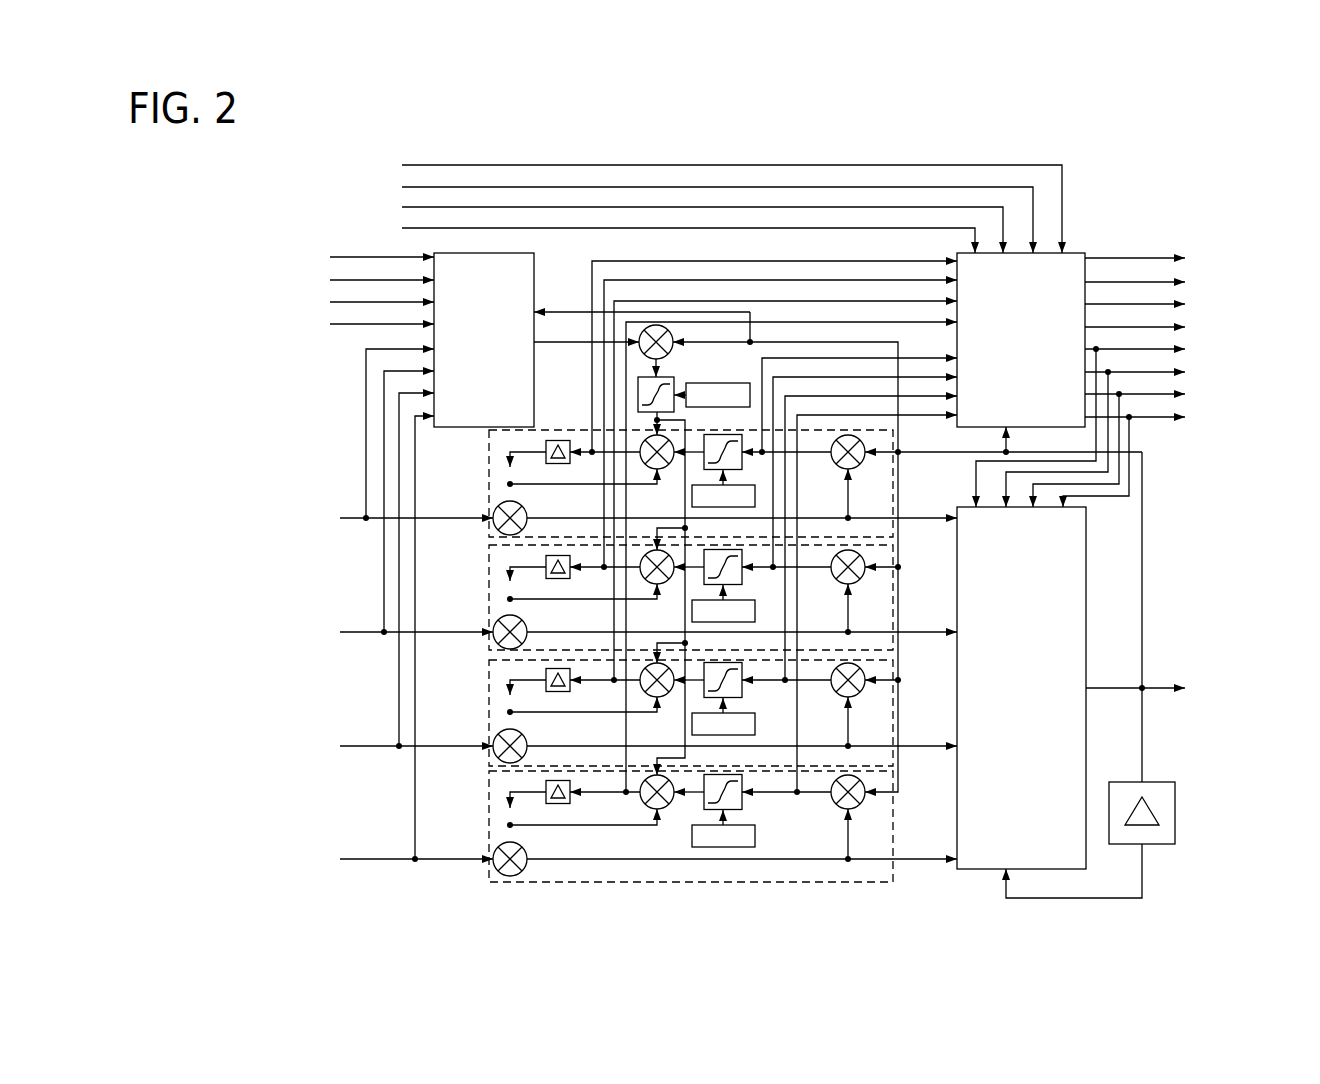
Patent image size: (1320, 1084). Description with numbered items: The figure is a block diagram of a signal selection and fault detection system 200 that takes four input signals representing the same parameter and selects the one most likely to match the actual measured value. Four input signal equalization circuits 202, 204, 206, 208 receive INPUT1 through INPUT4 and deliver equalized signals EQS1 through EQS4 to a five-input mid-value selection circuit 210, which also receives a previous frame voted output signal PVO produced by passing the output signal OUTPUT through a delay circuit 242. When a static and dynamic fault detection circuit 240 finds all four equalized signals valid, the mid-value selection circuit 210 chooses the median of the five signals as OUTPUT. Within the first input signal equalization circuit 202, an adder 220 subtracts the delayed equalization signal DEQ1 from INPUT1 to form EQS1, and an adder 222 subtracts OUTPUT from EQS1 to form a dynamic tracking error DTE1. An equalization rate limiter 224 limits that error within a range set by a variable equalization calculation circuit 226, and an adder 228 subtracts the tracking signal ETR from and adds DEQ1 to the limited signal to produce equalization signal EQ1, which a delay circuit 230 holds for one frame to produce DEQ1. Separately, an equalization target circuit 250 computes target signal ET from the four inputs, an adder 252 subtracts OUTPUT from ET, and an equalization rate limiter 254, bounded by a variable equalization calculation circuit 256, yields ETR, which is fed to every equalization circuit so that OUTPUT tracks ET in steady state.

The signal selection and fault detection (SSFD) system 200 is at (1128, 168).
The first input signal equalization circuit 202 is at (486, 434).
The second input signal equalization circuit 204 is at (486, 549).
The third input signal equalization circuit 206 is at (486, 664).
The fourth input signal equalization circuit 208 is at (486, 775).
The five-input mid-value selection circuit 210 is at (1040, 604).
The adder 220 is at (522, 503).
The adder 222 is at (862, 463).
The equalization rate limiter 224 is at (742, 455).
The variable equalization calculation circuit 226 is at (720, 508).
The adder 228 is at (668, 434).
The delay circuit 230 is at (558, 440).
The static and dynamic fault detection circuit 240 is at (1038, 293).
The delay circuit 242 is at (1175, 793).
The equalization target circuit 250 is at (503, 310).
The adder 252 is at (672, 334).
The equalization rate limiter 254 is at (673, 380).
The variable equalization calculation circuit 256 is at (740, 383).